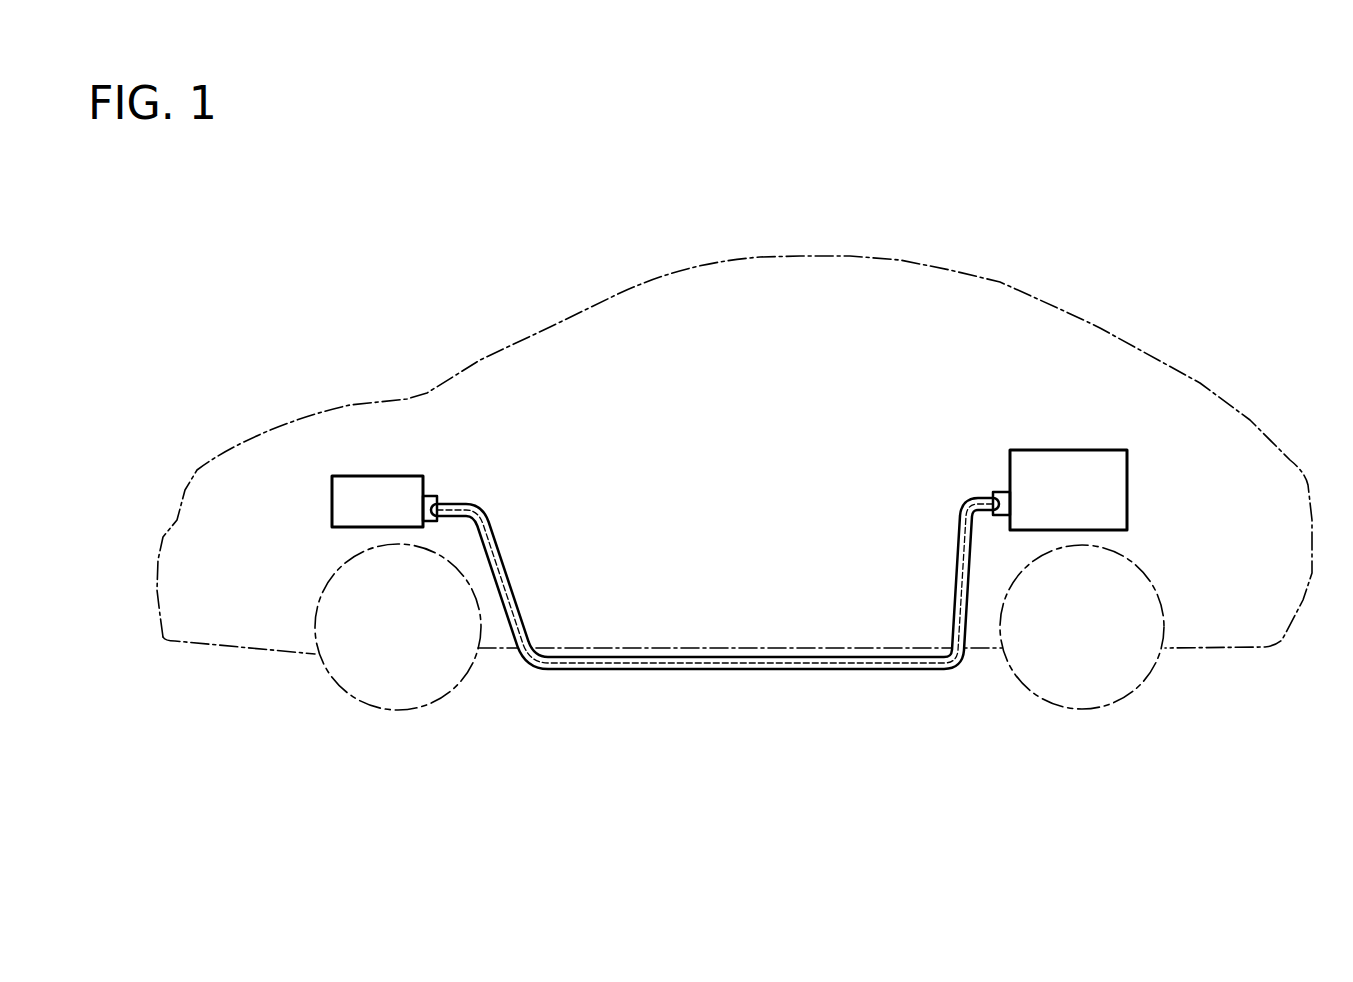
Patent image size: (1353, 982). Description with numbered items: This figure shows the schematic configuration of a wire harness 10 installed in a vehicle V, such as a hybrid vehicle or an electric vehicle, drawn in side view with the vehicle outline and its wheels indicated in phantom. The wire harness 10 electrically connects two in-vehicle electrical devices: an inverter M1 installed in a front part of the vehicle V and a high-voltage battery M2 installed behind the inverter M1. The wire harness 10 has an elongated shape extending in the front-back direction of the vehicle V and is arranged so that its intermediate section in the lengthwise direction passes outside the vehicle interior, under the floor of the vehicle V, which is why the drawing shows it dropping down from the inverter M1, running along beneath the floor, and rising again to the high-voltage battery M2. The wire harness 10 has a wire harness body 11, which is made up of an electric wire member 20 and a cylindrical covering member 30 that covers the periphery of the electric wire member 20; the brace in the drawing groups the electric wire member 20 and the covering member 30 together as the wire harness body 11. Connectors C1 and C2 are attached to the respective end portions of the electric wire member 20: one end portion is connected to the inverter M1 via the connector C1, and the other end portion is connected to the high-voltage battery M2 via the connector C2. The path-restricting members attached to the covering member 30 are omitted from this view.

The vehicle V is at (1040, 297).
The wire harness 10 is at (720, 519).
The wire harness body 11 is at (715, 583).
The electric wire member 20 is at (962, 548).
The covering member 30 is at (956, 582).
The inverter M1 is at (383, 476).
The high-voltage battery M2 is at (1097, 450).
The connector C1 is at (430, 497).
The connector C2 is at (1001, 492).